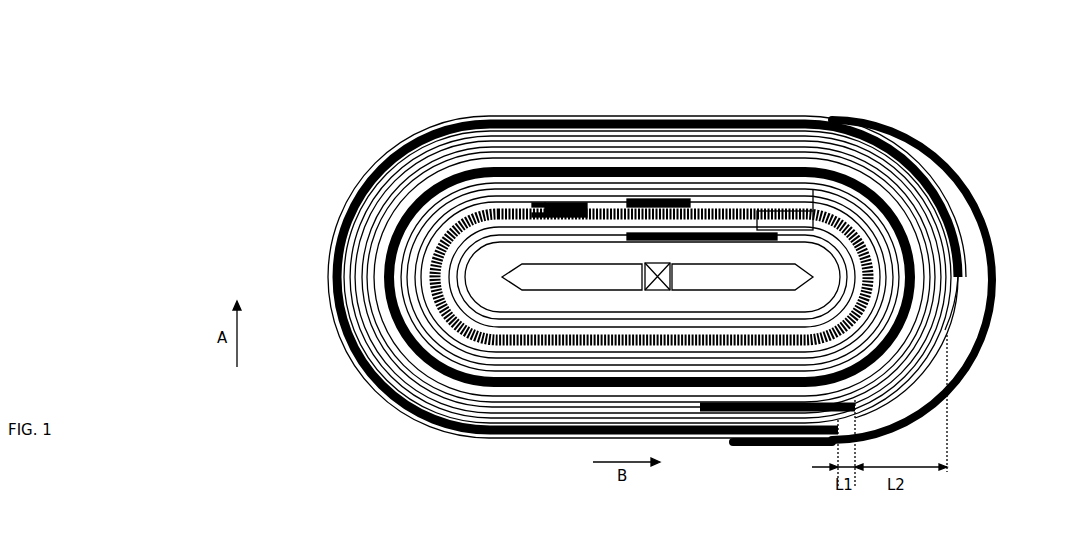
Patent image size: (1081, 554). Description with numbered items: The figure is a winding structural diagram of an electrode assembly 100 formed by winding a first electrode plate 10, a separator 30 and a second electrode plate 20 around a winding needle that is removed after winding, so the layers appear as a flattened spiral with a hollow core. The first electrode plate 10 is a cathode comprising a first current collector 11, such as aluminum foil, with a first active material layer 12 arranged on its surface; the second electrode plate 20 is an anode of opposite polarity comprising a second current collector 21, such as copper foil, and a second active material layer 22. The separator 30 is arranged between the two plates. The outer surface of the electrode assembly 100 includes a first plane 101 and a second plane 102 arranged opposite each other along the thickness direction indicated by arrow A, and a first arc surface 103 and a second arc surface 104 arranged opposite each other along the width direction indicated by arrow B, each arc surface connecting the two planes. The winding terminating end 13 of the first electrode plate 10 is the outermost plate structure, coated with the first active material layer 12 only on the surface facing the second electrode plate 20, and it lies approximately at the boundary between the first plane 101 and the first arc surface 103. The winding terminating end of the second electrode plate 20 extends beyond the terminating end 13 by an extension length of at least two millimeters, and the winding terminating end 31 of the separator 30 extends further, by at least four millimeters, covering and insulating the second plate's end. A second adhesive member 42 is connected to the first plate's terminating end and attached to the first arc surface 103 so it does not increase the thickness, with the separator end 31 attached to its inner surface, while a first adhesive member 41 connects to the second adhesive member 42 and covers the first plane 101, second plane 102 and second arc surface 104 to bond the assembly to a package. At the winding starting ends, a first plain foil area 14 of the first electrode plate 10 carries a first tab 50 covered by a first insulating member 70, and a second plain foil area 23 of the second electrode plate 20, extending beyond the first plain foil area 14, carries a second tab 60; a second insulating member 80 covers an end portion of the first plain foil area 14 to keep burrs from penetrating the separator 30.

The electrode assembly 100 is at (560, 41).
The first electrode plate 10 is at (286, 236).
The first current collector 11 is at (340, 277).
The first active material layer 12 is at (340, 243).
The winding terminating end of the first electrode plate 13 is at (770, 449).
The first plain foil area 14 is at (646, 258).
The second electrode plate 20 is at (389, 105).
The second current collector 21 is at (428, 137).
The second active material layer 22 is at (384, 152).
The second plain foil area 23 is at (812, 190).
The separator 30 is at (343, 206).
The winding terminating end of the separator 31 is at (915, 398).
The first adhesive member 41 is at (334, 228).
The second adhesive member 42 is at (994, 254).
The first tab 50 is at (546, 207).
The second tab 60 is at (757, 211).
The first insulating member 70 is at (571, 203).
The second insulating member 80 is at (673, 199).
The first plane 101 is at (538, 438).
The second plane 102 is at (812, 112).
The first arc surface 103 is at (1000, 279).
The second arc surface 104 is at (335, 342).